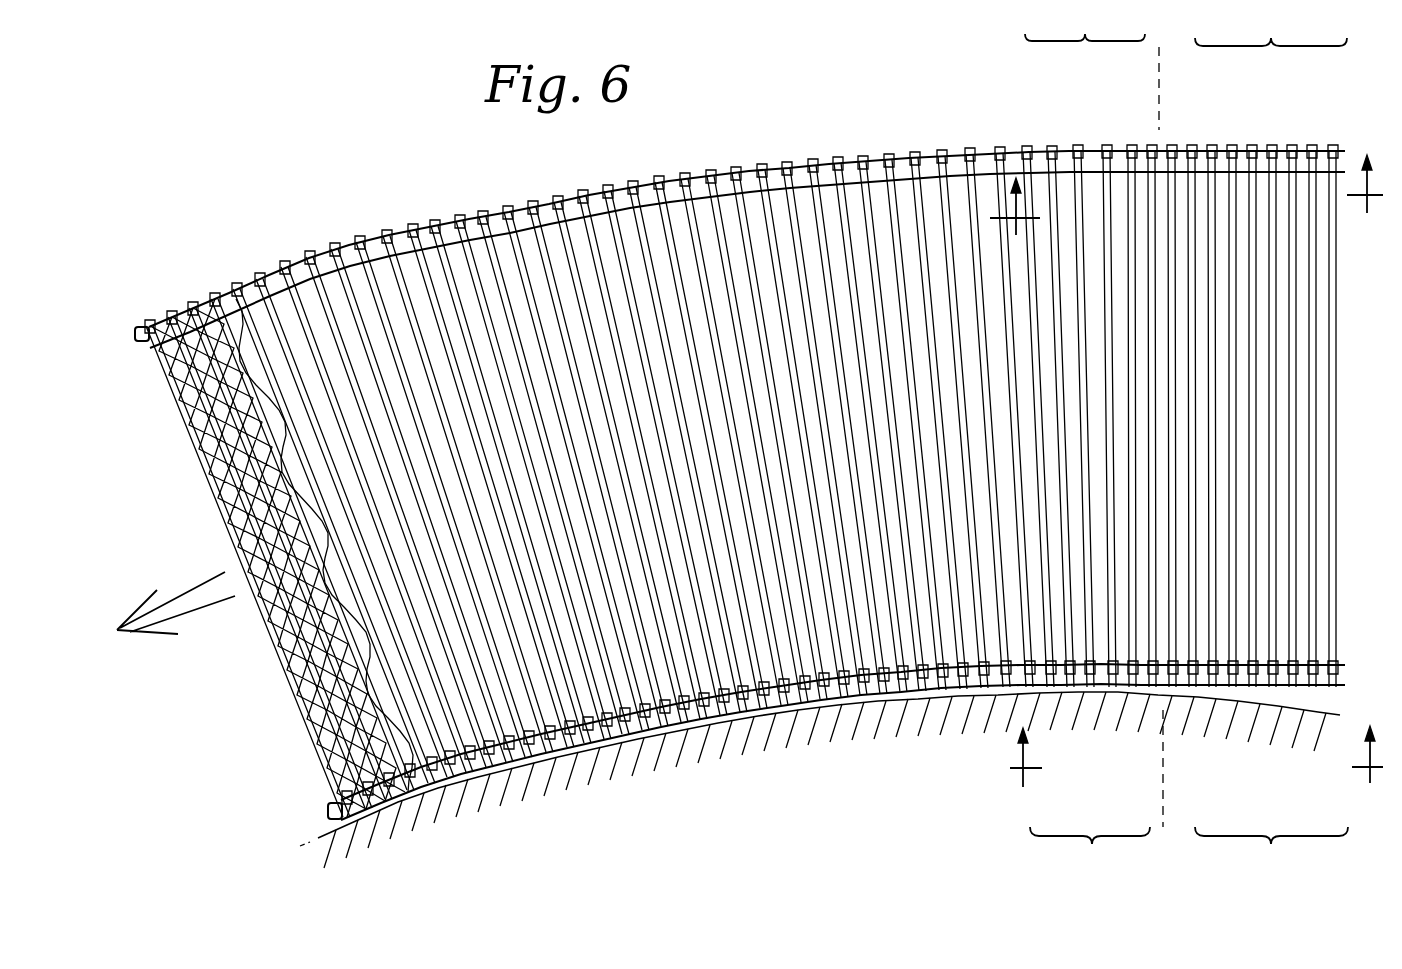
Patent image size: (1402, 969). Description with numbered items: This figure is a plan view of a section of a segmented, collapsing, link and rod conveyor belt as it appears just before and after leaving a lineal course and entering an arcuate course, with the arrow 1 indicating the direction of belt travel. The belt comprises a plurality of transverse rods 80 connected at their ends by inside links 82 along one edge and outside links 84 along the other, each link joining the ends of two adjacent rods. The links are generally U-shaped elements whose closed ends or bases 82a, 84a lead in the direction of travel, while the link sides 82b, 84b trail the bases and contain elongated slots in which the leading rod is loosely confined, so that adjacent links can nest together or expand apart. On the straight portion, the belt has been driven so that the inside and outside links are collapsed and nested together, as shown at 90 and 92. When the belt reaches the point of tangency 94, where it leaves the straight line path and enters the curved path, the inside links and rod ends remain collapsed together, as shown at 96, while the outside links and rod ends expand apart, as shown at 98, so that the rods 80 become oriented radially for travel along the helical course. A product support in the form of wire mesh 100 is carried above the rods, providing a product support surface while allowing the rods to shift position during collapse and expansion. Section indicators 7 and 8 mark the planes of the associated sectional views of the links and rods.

The transverse rods 80 is at (1103, 690).
The inside links 82 is at (995, 688).
The inside link base 82a is at (323, 815).
The inside link sides 82b is at (337, 797).
The outside links 84 is at (1093, 150).
The outside link base 84a is at (140, 338).
The outside link sides 84b is at (136, 328).
The collapsed inside link region 90 is at (1271, 850).
The collapsed outside link region 92 is at (1271, 24).
The point of tangency 94 is at (1160, 105).
The collapsed inside link region on the curve 96 is at (1090, 850).
The expanded outside link region 98 is at (1085, 21).
The wire mesh 100 is at (293, 663).
The direction arrow 1 is at (173, 590).
The section line 7 is at (1196, 776).
The section line 8 is at (1016, 214).